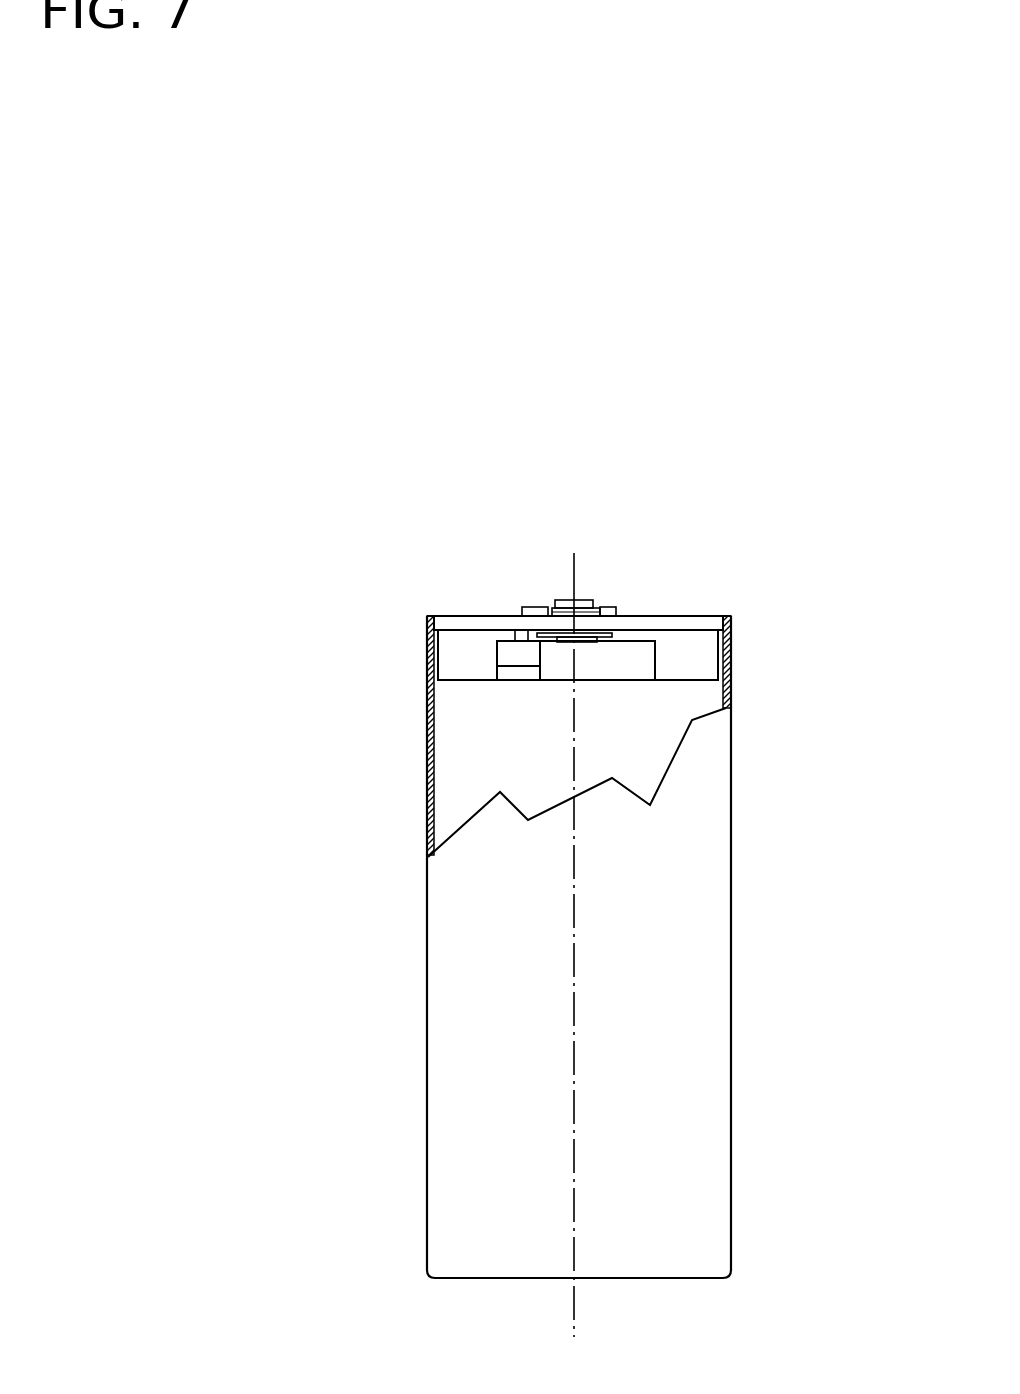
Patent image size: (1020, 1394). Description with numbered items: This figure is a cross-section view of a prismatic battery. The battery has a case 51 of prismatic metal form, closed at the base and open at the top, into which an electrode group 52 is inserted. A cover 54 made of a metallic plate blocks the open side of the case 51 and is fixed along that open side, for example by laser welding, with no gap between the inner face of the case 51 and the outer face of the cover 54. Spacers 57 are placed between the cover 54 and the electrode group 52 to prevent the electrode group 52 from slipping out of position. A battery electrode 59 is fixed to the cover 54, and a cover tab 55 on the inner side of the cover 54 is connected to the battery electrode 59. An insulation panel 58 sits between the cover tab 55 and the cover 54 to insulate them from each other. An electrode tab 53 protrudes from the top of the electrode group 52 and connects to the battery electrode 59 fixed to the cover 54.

The case 51 is at (730, 686).
The electrode group 52 is at (558, 770).
The electrode tab 53 is at (511, 670).
The cover 54 is at (708, 617).
The cover tab 55 is at (514, 647).
The spacer 57 is at (698, 657).
The insulation panel 58 is at (618, 638).
The battery electrode 59 is at (578, 600).